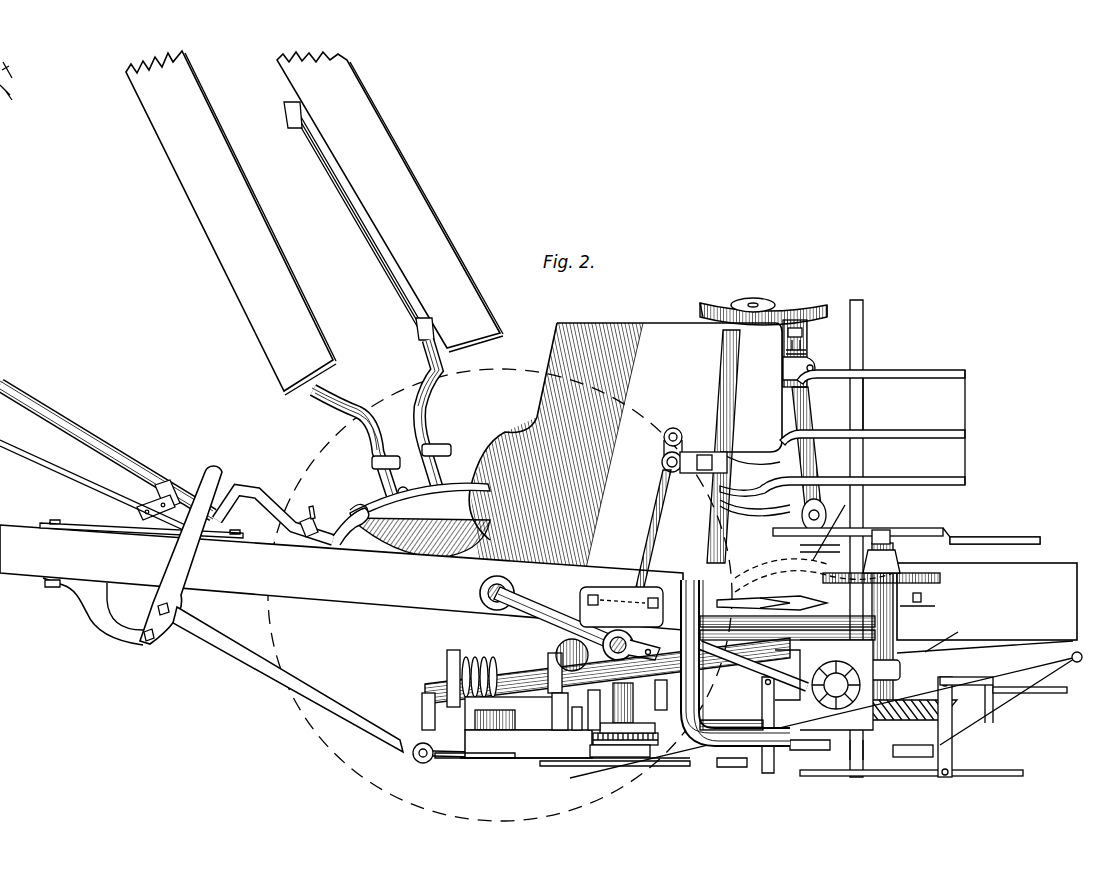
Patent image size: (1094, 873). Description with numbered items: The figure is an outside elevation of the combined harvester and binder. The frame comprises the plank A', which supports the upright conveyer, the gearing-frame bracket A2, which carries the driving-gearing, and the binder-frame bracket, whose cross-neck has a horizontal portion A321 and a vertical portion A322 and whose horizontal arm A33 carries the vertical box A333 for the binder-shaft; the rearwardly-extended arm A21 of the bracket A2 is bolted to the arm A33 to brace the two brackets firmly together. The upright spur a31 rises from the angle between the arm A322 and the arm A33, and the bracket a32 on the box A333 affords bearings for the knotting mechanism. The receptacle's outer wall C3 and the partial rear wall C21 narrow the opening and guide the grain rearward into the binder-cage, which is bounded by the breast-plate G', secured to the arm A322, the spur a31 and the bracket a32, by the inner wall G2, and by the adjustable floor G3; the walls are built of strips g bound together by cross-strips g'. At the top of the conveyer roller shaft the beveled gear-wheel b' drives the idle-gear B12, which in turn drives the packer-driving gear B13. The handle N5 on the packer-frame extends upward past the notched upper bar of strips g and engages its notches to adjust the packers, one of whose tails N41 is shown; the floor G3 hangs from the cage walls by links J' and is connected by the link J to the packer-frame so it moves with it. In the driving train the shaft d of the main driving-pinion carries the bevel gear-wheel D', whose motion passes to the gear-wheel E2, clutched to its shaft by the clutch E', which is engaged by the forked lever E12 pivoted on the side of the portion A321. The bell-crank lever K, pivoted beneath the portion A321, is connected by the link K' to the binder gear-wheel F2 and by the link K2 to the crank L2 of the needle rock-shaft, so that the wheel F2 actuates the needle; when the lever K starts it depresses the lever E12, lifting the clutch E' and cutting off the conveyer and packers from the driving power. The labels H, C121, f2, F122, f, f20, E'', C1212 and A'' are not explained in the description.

The outer wall C3 is at (625, 445).
The link K' is at (482, 704).
The beveled gear-wheel b' is at (708, 297).
The idle-gear B12 is at (760, 296).
The packer-driving gear B13 is at (810, 297).
The arm or handle N5 is at (871, 531).
The strips g is at (853, 439).
The cross-strips g' is at (880, 404).
The inner wall G2 is at (952, 427).
The partial rear wall C21 is at (813, 399).
The upright arm or spur a31 is at (700, 552).
The bar H is at (942, 546).
The breast-plate or outer wall G' is at (897, 599).
The vertical box A333 is at (787, 615).
The horizontal arm A33 is at (787, 630).
The bracket a32 is at (931, 603).
The packer tail N41 is at (900, 571).
The shaft C121 is at (792, 555).
The collar f2 is at (881, 616).
The adjustable floor G3 is at (903, 760).
The links J' is at (873, 727).
The binder gear-wheel F2 is at (995, 720).
The link J is at (832, 717).
The crank L2 is at (913, 758).
The post F122 is at (848, 762).
The link K2 is at (820, 762).
The bevel gear-wheel D' is at (520, 613).
The shaft d is at (577, 632).
The rod f is at (607, 684).
The rod f20 is at (753, 676).
The plank A' is at (556, 729).
The post E'' is at (563, 725).
The horizontal portion A321 is at (648, 762).
The forked lever E12 is at (639, 703).
The gear-wheel E2 is at (635, 720).
The clutch E' is at (583, 719).
The bracket (gearing-frame) A2 is at (599, 710).
The rearwardly-extended arm A21 is at (672, 693).
The bell-crank lever K is at (712, 771).
The pipe C1212 is at (738, 660).
The bracket A'' is at (789, 675).
The vertical portion A322 is at (735, 717).